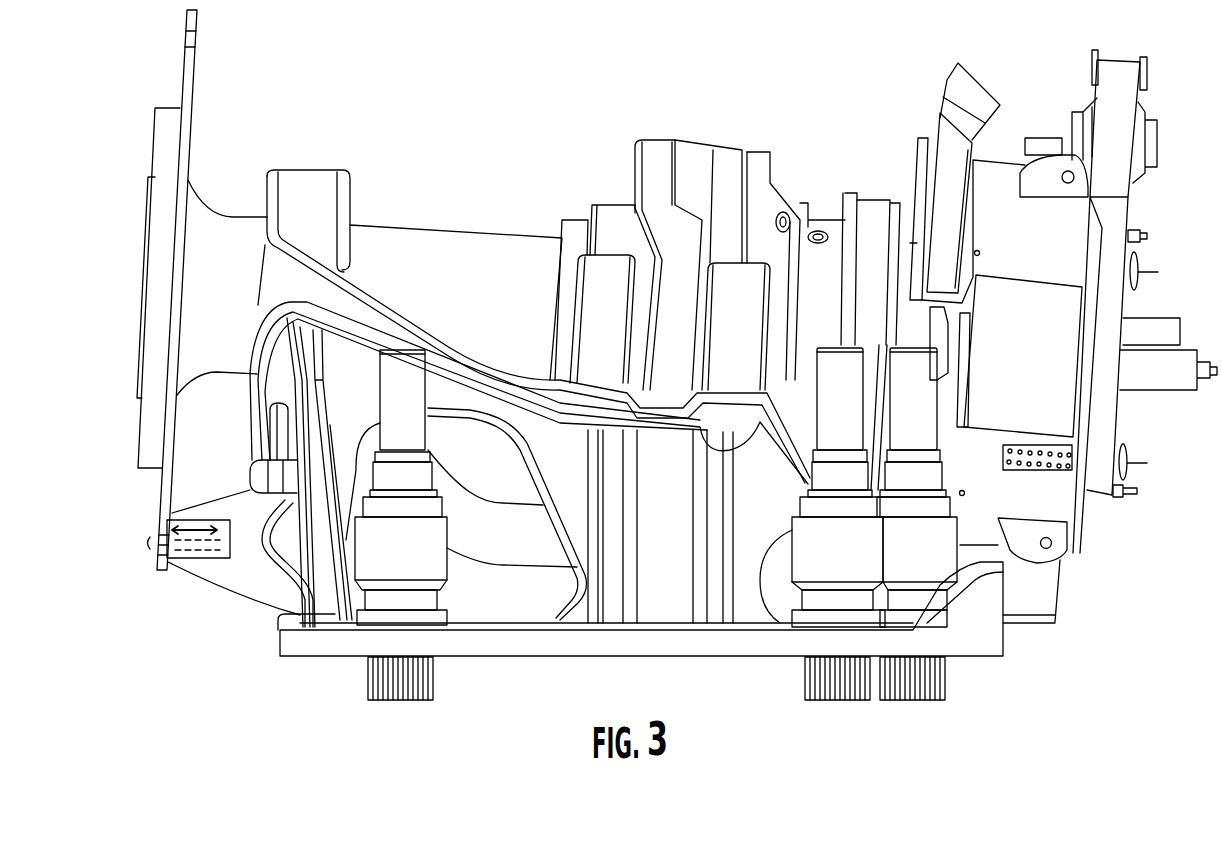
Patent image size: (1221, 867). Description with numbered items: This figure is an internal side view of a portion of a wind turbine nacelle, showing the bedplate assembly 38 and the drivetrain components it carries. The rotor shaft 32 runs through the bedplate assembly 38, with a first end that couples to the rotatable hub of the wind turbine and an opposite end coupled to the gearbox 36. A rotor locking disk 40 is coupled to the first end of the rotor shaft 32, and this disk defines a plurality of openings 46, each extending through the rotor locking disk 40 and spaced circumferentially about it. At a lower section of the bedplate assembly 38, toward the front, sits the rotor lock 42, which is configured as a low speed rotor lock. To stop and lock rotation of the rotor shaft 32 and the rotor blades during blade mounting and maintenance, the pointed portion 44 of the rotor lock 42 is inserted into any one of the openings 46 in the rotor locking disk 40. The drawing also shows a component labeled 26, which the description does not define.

The circuit board 26 is at (1003, 375).
The rotor shaft 32 is at (413, 255).
The gearbox 36 is at (908, 187).
The bedplate assembly 38 is at (248, 582).
The rotor locking disk 40 is at (192, 62).
The rotor lock 42 is at (222, 557).
The pointed portion 44 is at (200, 545).
The openings 46 is at (185, 33).